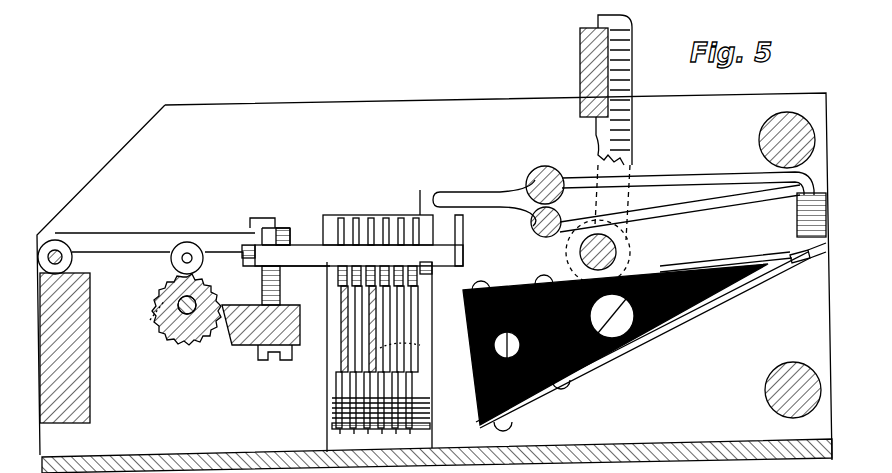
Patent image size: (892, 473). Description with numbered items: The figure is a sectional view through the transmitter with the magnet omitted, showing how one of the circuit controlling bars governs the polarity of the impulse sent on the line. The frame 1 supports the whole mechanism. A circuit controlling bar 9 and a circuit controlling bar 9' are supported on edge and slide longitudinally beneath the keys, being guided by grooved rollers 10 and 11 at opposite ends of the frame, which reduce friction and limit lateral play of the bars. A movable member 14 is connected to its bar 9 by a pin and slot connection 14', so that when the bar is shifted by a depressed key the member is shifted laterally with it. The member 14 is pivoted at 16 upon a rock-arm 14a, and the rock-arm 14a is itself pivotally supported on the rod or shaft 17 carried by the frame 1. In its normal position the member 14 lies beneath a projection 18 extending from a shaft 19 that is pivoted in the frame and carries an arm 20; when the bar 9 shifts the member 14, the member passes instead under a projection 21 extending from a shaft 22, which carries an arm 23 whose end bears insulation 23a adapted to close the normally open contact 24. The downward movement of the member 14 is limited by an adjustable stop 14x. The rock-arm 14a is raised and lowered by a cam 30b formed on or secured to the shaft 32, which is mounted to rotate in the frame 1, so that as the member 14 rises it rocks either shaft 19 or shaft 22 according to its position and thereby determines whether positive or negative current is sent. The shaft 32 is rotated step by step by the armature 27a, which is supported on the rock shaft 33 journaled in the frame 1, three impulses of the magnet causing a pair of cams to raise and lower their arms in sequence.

The frame 1 is at (165, 432).
The circuit controlling bar 9 is at (393, 320).
The circuit controlling bar 9' is at (281, 347).
The grooved roller 10 is at (368, 215).
The grooved roller 11 is at (335, 413).
The movable member 14 is at (359, 226).
The pin and slot connection 14' is at (418, 188).
The rock-arm 14a is at (155, 232).
The adjustable stop 14x is at (279, 276).
The pivotal connection 16 is at (262, 218).
The rod or shaft 17 is at (60, 250).
The projection 18 is at (470, 192).
The shaft 19 is at (545, 166).
The arm 20 is at (688, 176).
The projection 21 is at (531, 224).
The shaft 22 is at (636, 341).
The arm 23 is at (682, 205).
The insulation 23a is at (795, 222).
The normally open contact 24 is at (796, 268).
The armature 27a is at (580, 78).
The cam 30b is at (150, 322).
The shaft 32 is at (180, 340).
The rock shaft 33 is at (618, 252).